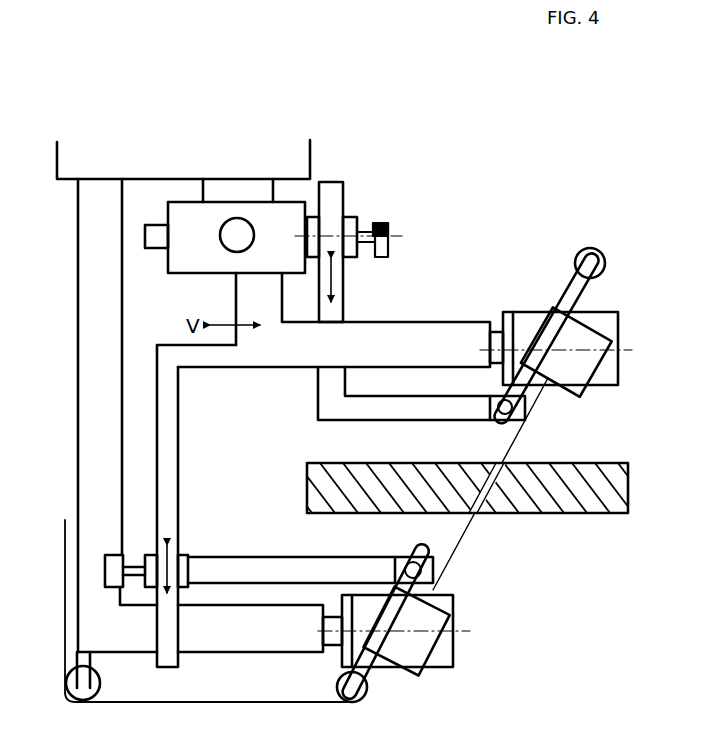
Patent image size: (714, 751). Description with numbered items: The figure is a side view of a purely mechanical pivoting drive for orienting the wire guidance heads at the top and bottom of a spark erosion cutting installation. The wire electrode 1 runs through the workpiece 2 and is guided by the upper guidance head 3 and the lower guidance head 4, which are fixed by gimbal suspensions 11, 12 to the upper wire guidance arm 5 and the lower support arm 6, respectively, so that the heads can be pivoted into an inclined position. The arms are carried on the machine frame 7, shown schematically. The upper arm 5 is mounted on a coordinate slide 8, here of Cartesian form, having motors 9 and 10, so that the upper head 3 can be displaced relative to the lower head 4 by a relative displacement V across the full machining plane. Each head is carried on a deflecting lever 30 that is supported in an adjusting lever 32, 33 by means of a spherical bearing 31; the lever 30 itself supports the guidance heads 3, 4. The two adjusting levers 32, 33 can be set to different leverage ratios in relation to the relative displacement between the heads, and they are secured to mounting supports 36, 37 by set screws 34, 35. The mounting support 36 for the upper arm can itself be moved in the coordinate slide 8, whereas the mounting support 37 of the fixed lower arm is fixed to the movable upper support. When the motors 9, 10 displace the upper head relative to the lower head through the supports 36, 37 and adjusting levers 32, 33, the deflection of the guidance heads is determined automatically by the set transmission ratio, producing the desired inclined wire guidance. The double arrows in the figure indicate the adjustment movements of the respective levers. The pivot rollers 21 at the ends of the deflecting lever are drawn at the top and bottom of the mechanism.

The wire electrode 1 is at (610, 172).
The workpiece 2 is at (308, 496).
The upper guidance head 3 is at (574, 378).
The lower guidance head 4 is at (418, 665).
The upper wire guidance arm 5 is at (440, 332).
The lower support arm 6 is at (242, 646).
The machine frame 7 is at (296, 156).
The coordinate slide 8 is at (184, 273).
The motor 9 is at (150, 249).
The motor 10 is at (230, 248).
The gimbal suspension 11 is at (530, 323).
The gimbal suspension 12 is at (445, 657).
The pivot roller 21 is at (603, 274).
The deflecting lever 30 is at (498, 424).
The spherical bearing 31 is at (520, 421).
The upper adjusting lever 32 is at (326, 403).
The lower adjusting lever 33 is at (262, 563).
The set screw 34 is at (389, 246).
The set screw 35 is at (112, 576).
The upper mounting support 36 is at (336, 197).
The lower mounting support 37 is at (176, 505).